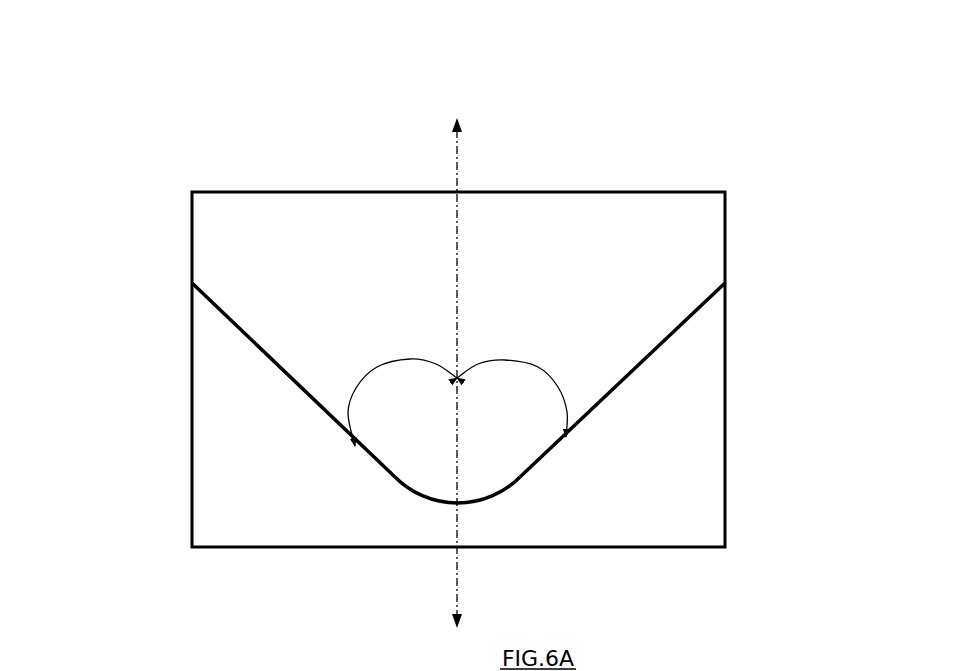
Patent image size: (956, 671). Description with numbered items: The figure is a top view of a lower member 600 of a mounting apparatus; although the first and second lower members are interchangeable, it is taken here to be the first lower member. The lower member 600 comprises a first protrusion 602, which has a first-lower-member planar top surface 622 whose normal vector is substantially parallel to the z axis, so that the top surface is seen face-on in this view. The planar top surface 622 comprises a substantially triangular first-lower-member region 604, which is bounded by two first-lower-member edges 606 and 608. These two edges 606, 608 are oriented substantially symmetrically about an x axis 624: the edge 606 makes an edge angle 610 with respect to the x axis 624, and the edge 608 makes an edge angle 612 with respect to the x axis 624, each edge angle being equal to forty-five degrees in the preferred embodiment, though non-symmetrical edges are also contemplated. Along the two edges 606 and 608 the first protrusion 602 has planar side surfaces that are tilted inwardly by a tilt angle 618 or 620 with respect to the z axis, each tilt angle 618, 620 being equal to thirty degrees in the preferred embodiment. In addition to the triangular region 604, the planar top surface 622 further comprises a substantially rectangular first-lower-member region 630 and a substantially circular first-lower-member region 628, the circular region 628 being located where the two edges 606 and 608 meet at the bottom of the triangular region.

The lower member 600 is at (800, 173).
The first protrusion 602 is at (557, 192).
The substantially triangular first-lower-member region 604 is at (325, 350).
The first-lower-member edge 606 is at (635, 372).
The first-lower-member edge 608 is at (275, 365).
The edge angle 610 is at (548, 378).
The edge angle 612 is at (366, 372).
The tilt angle 618 is at (660, 666).
The tilt angle 620 is at (313, 645).
The first-lower-member planar top surface 622 is at (563, 305).
The x axis 624 is at (455, 175).
The substantially circular first-lower-member region 628 is at (415, 463).
The substantially rectangular first-lower-member region 630 is at (372, 240).